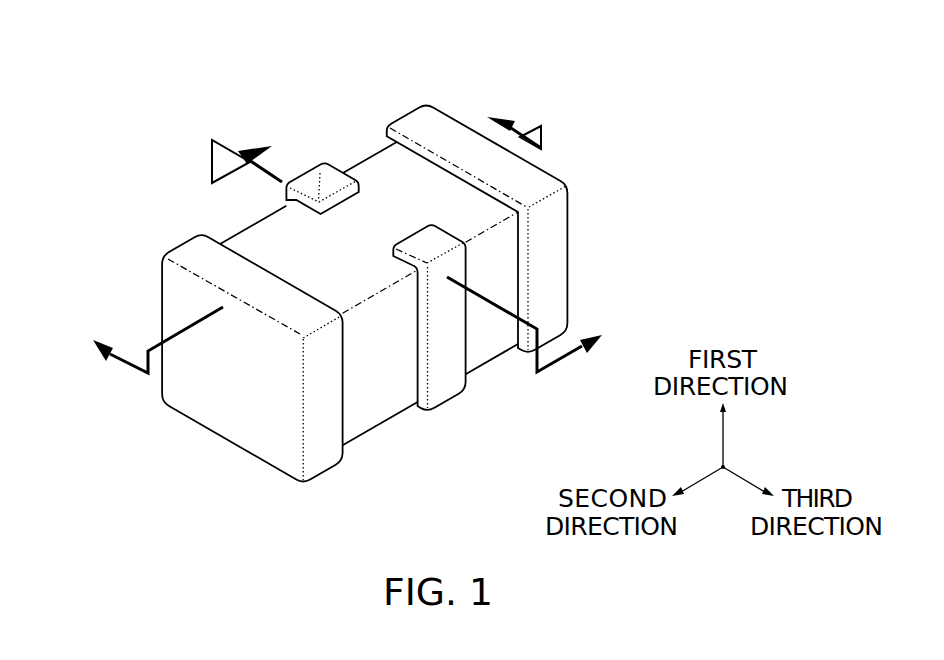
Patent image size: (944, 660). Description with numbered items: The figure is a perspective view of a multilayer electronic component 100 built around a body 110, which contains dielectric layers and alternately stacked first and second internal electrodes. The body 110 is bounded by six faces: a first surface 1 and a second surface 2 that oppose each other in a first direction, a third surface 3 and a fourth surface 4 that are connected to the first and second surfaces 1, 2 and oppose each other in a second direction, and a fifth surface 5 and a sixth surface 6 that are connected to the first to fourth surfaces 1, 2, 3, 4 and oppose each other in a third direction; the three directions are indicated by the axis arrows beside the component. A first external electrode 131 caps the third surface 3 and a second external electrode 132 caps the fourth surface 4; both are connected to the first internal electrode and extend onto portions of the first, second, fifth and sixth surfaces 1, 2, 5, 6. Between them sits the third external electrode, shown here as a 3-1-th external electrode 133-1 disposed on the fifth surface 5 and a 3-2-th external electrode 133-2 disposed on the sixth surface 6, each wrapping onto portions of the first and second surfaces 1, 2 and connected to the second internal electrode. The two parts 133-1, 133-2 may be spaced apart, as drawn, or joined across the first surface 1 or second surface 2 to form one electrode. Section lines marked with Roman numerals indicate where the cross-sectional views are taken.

The multilayer electronic component 100 is at (193, 58).
The body 110 is at (358, 165).
The first external electrode 131 is at (168, 292).
The second external electrode 132 is at (413, 118).
The 3-1-th external electrode 133-1 is at (318, 183).
The 3-2-th external electrode 133-2 is at (440, 368).
The first surface 1 is at (395, 168).
The second surface 2 is at (376, 442).
The third surface 3 is at (211, 409).
The fourth surface 4 is at (572, 213).
The fifth surface 5 is at (222, 222).
The sixth surface 6 is at (493, 352).